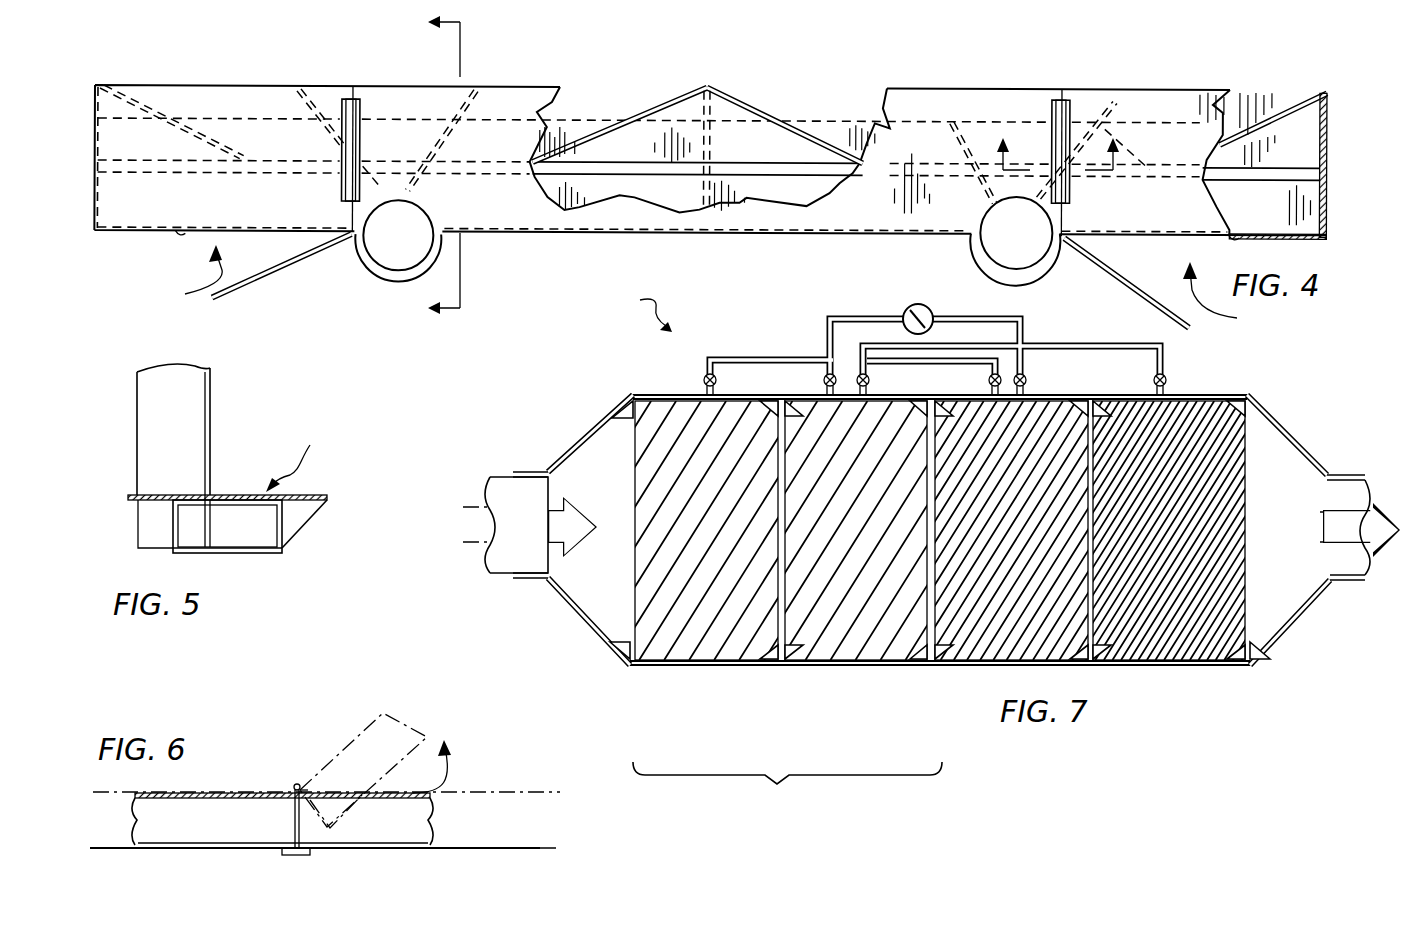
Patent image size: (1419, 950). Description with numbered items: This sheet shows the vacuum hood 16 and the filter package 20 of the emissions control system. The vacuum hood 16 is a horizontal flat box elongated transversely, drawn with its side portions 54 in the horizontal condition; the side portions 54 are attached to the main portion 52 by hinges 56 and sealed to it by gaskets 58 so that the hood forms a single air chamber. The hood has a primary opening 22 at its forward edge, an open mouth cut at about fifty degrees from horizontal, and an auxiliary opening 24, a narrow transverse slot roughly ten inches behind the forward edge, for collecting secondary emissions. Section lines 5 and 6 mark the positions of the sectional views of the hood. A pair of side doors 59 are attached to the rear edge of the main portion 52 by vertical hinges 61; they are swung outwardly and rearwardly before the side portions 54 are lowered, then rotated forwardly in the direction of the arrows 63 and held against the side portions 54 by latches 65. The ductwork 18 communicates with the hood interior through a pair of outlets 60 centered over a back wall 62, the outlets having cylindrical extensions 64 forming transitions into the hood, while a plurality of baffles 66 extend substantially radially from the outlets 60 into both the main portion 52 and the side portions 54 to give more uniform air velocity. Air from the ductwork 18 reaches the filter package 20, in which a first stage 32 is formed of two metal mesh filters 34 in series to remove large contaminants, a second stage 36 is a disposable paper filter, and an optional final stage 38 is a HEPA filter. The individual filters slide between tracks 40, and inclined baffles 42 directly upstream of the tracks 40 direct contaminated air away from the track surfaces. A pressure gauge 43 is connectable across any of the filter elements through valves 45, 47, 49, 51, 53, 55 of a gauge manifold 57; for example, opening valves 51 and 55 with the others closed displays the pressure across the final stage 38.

In FIG. 4, the section line 5- 5 is at (435, 165).
In FIG. 4, the section line 6- 6 is at (1057, 151).
In FIG. 4, the vacuum hood 16 is at (547, 84).
In FIG. 5, the vacuum hood 16 is at (299, 455).
In FIG. 6, the vacuum hood 16 is at (268, 788).
In FIG. 5, the ductwork 18 is at (137, 470).
In FIG. 7, the ductwork 18 is at (514, 470).
In FIG. 7, the filter package 20 is at (640, 312).
In FIG. 4, the primary opening 22 is at (108, 118).
In FIG. 5, the primary opening 22 is at (300, 530).
In FIG. 4, the auxiliary opening 24 is at (118, 176).
In FIG. 5, the auxiliary opening 24 is at (236, 553).
In FIG. 7, the first stage 32 is at (787, 789).
In FIG. 7, the metal mesh filters 34 is at (690, 608).
In FIG. 7, the second stage 36 is at (972, 595).
In FIG. 7, the final stage 38 is at (1140, 600).
In FIG. 7, the tracks 40 is at (640, 396).
In FIG. 7, the inclined baffles 42 is at (614, 418).
In FIG. 7, the pressure gauge 43 is at (906, 310).
In FIG. 7, the valve 45 is at (720, 380).
In FIG. 7, the valve 47 is at (822, 381).
In FIG. 7, the valve 49 is at (872, 380).
In FIG. 7, the valve 51 is at (985, 381).
In FIG. 7, the valve 53 is at (1029, 380).
In FIG. 7, the valve 55 is at (1169, 380).
In FIG. 7, the gauge manifold 57 is at (1066, 344).
In FIG. 4, the main portion 52 is at (932, 88).
In FIG. 6, the main portion 52 is at (230, 850).
In FIG. 4, the side portions 54 is at (252, 85).
In FIG. 6, the side portions 54 is at (447, 778).
In FIG. 4, the hinges 56 is at (360, 112).
In FIG. 6, the hinges 56 is at (297, 783).
In FIG. 6, the gaskets 58 is at (292, 856).
In FIG. 4, the side doors 59 is at (300, 270).
In FIG. 4, the outlets 60 is at (400, 272).
In FIG. 5, the outlets 60 is at (213, 493).
In FIG. 4, the vertical hinges 61 is at (356, 242).
In FIG. 4, the back wall 62 is at (540, 235).
In FIG. 5, the back wall 62 is at (172, 525).
In FIG. 4, the arrows 63 is at (709, 288).
In FIG. 5, the cylindrical extensions 64 is at (131, 515).
In FIG. 4, the latches 65 is at (183, 236).
In FIG. 4, the baffles 66 is at (203, 90).